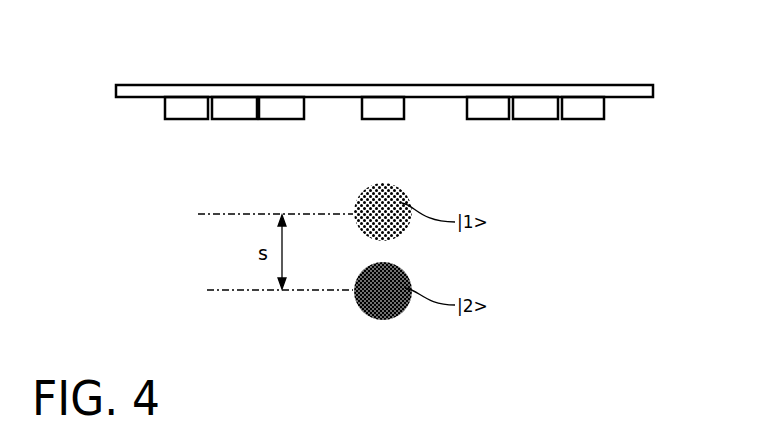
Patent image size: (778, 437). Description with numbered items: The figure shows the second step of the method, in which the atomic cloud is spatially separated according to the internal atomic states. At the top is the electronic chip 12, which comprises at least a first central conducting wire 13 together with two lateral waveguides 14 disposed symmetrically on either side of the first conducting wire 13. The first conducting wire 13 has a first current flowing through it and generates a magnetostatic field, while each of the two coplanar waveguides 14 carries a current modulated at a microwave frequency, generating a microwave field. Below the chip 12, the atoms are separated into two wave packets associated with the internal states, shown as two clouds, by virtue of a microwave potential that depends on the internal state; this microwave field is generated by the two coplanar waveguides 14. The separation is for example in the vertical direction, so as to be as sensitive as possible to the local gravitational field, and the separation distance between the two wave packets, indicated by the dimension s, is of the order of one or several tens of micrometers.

The electronic chip 12 is at (457, 90).
The first central conducting wire 13 is at (392, 97).
The lateral waveguides 14 is at (228, 148).